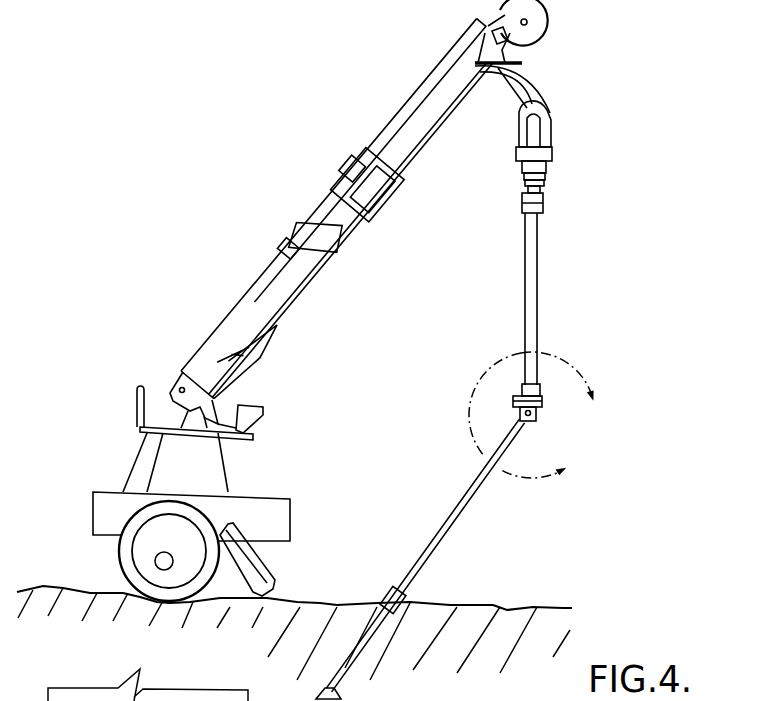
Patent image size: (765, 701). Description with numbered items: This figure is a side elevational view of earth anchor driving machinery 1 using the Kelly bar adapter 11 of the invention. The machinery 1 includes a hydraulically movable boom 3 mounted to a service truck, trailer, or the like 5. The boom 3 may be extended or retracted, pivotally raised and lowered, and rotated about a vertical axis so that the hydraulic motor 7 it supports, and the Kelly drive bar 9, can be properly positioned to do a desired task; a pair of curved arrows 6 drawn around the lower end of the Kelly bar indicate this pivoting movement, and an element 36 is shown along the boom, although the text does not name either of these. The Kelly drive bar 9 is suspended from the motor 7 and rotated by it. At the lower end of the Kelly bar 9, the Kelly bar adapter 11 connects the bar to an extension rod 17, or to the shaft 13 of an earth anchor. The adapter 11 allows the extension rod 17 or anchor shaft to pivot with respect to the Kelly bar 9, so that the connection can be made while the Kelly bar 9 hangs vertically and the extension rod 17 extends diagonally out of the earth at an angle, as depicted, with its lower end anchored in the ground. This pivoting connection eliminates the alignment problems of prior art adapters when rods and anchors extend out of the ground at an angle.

The earth anchor driving machinery 1 is at (157, 327).
The boom 3 is at (223, 322).
The service truck, trailer, or the like 5 is at (224, 463).
The rotation of rod about joint 6 is at (540, 415).
The hydraulic motor 7 is at (547, 130).
The Kelly drive bar 9 is at (537, 313).
The Kelly bar adapter 11 is at (556, 414).
The shaft 13 is at (342, 678).
The extension rod 17 is at (461, 511).
The carriage clamp 36 is at (379, 214).